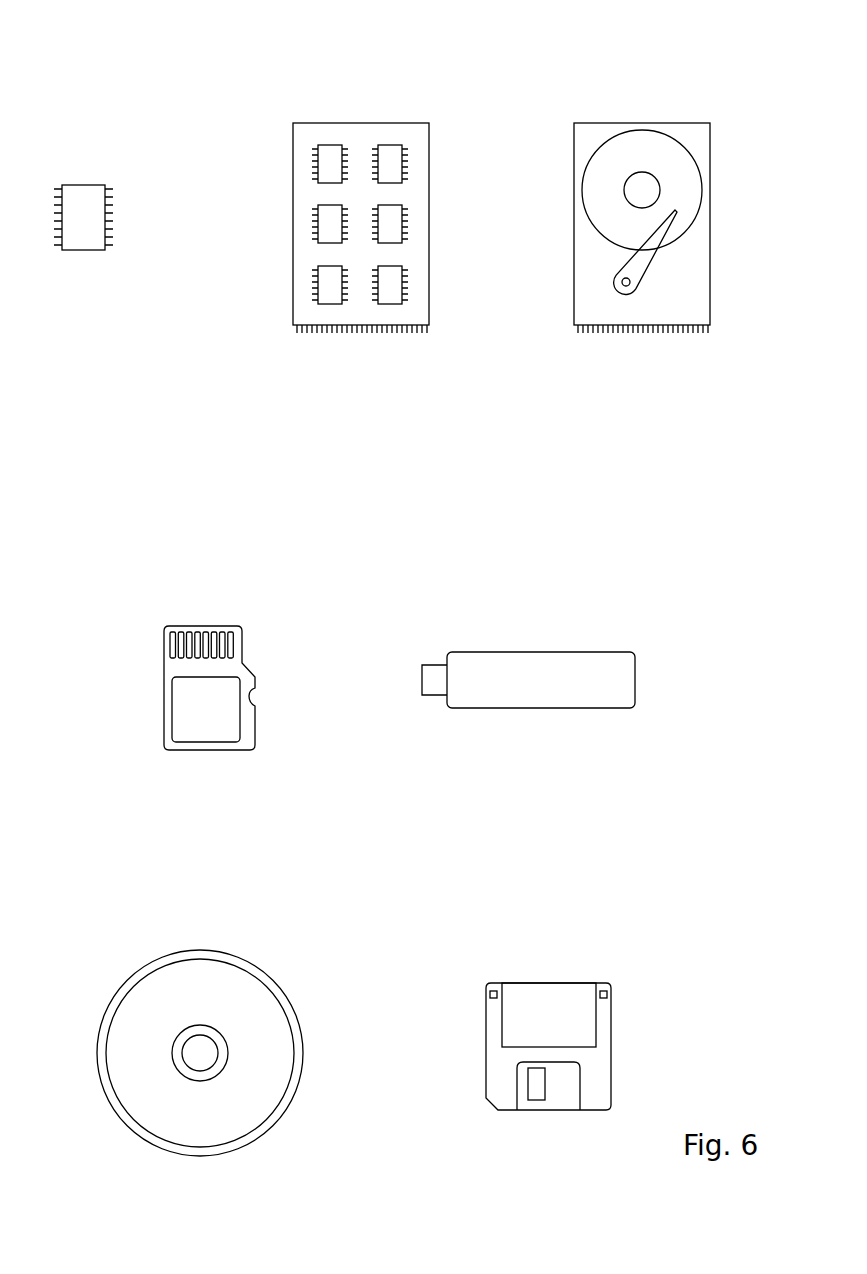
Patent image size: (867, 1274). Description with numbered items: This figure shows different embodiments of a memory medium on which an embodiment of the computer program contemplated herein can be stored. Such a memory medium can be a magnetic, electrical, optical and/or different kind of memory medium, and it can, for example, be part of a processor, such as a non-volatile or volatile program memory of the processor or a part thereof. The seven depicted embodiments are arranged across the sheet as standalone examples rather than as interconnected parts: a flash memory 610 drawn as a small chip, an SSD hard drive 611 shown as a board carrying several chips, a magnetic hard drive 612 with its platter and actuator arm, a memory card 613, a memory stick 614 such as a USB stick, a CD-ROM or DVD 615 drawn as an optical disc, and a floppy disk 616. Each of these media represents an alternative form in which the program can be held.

The flash memory 610 is at (107, 147).
The SSD hard drive 611 is at (432, 84).
The magnetic hard drive 612 is at (713, 85).
The memory card 613 is at (245, 593).
The memory stick 614 is at (610, 612).
The CD-ROM or DVD 615 is at (284, 942).
The floppy disk 616 is at (605, 945).